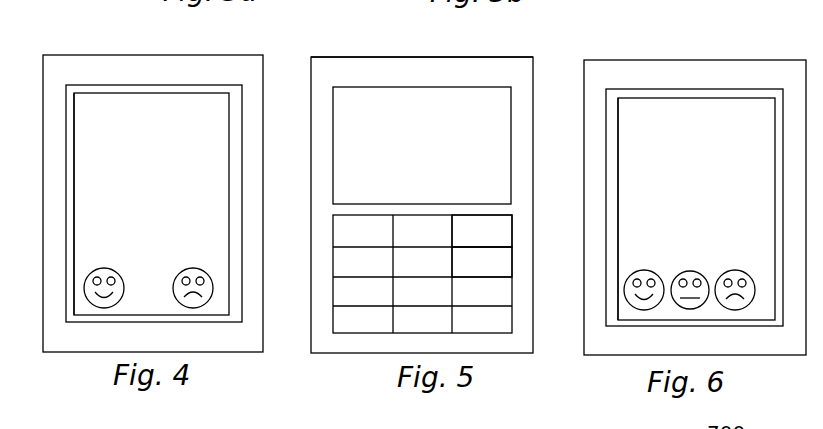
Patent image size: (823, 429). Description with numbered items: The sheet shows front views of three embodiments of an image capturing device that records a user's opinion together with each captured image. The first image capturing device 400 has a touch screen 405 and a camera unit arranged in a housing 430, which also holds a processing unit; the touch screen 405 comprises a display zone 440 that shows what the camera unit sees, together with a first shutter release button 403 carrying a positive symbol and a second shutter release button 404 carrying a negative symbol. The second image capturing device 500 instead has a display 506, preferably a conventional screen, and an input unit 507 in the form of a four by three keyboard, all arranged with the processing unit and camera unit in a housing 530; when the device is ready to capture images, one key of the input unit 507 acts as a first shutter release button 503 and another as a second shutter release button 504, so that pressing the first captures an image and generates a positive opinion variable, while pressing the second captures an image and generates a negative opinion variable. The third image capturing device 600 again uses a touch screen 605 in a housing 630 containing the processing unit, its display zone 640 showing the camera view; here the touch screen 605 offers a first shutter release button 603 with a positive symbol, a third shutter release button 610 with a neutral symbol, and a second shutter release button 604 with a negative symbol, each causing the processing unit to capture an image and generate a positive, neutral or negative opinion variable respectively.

In FIG. 4, the image capturing device 400 is at (100, 32).
In FIG. 4, the housing 430 is at (154, 169).
In FIG. 4, the touch screen 405 is at (190, 175).
In FIG. 4, the display zone 440 is at (52, 172).
In FIG. 4, the first shutter release button 403 is at (101, 265).
In FIG. 4, the second shutter release button 404 is at (180, 265).
In FIG. 5, the image capturing device 500 is at (409, 48).
In FIG. 5, the housing 530 is at (422, 31).
In FIG. 5, the display 506 is at (424, 119).
In FIG. 5, the first shutter release button 503 is at (391, 259).
In FIG. 5, the second shutter release button 504 is at (515, 219).
In FIG. 5, the input unit 507 is at (515, 246).
In FIG. 6, the image capturing device 600 is at (713, 50).
In FIG. 6, the housing 630 is at (694, 166).
In FIG. 6, the touch screen 605 is at (713, 178).
In FIG. 6, the display zone 640 is at (600, 166).
In FIG. 6, the first shutter release button 603 is at (653, 258).
In FIG. 6, the third shutter release button 610 is at (696, 270).
In FIG. 6, the second shutter release button 604 is at (744, 266).